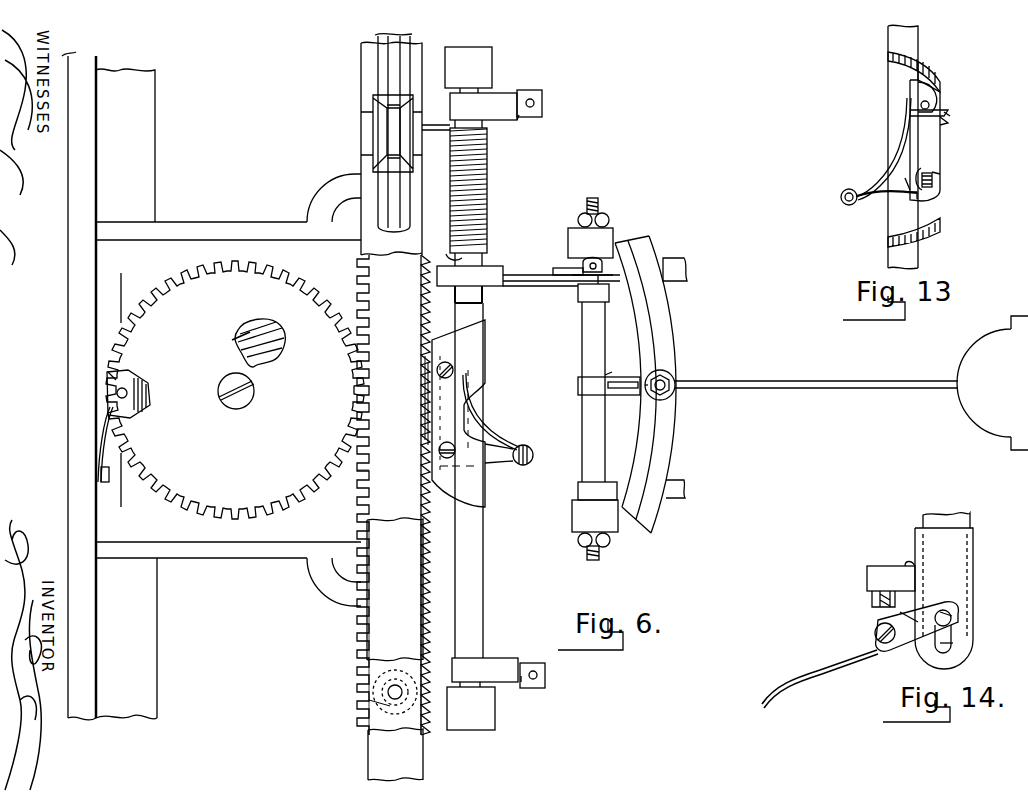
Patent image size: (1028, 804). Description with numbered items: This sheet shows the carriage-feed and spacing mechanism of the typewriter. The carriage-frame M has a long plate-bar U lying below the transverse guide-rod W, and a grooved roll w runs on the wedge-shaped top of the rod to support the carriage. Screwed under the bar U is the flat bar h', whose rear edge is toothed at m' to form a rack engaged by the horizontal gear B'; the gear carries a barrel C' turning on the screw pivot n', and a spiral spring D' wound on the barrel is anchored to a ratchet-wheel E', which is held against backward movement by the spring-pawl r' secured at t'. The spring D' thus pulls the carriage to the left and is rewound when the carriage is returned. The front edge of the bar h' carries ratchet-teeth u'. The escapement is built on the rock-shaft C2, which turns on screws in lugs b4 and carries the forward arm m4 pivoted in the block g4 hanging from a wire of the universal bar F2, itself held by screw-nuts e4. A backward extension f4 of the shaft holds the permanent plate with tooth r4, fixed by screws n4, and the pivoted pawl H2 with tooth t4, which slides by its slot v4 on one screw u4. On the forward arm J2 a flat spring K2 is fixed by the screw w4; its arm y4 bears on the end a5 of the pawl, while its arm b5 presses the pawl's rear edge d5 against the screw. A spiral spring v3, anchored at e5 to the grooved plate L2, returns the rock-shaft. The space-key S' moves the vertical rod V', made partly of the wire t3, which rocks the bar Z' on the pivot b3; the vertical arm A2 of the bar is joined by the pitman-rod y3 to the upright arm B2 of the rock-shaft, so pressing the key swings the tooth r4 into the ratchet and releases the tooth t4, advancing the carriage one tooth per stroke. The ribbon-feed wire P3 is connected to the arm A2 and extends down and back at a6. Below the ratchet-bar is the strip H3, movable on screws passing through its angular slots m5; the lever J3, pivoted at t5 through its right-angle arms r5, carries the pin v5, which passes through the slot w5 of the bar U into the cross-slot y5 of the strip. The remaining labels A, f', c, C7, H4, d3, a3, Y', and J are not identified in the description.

In FIG. 6, the frame column A is at (148, 155).
In FIG. 6, the frame plate f' is at (58, 385).
In FIG. 6, the horizontal gear B' is at (235, 396).
In FIG. 6, the screw pivot n' is at (252, 391).
In FIG. 6, the barrel C' is at (267, 350).
In FIG. 6, the spiral spring D' is at (209, 370).
In FIG. 6, the pin c is at (230, 342).
In FIG. 6, the ratchet-wheel E' is at (95, 382).
In FIG. 6, the spring-pawl r' is at (91, 444).
In FIG. 6, the pawl securing point t' is at (91, 475).
In FIG. 6, the toothed rear edge m' is at (393, 495).
In FIG. 6, the ratchet-teeth u' is at (414, 400).
In FIG. 6, the flat horizontal bar h' is at (347, 485).
In FIG. 6, the plate-bar U is at (410, 236).
In FIG. 14, the plate-bar U is at (958, 563).
In FIG. 6, the guide-rod W is at (392, 83).
In FIG. 6, the grooved roll w is at (386, 133).
In FIG. 6, the spring end e5 is at (444, 254).
In FIG. 6, the spiral spring v3 is at (487, 176).
In FIG. 6, the lugs b4 is at (492, 74).
In FIG. 6, the horizontal arm m4 is at (498, 120).
In FIG. 13, the horizontal arm m4 is at (893, 101).
In FIG. 6, the block g4 is at (532, 398).
In FIG. 6, the eye block C7 is at (542, 104).
In FIG. 6, the eye block H4 is at (545, 676).
In FIG. 6, the grooved plate L2 is at (500, 266).
In FIG. 6, the vertical arm A2 is at (578, 296).
In FIG. 6, the upright arm B2 is at (484, 296).
In FIG. 6, the rock-shaft C2 is at (473, 312).
In FIG. 13, the rock-shaft C2 is at (946, 104).
In FIG. 6, the horizontal arm J2 is at (500, 470).
In FIG. 6, the spring arm y4 is at (503, 470).
In FIG. 13, the spring arm y4 is at (898, 197).
In FIG. 6, the securing-screws n4 is at (452, 360).
In FIG. 13, the securing-screws n4 is at (915, 108).
In FIG. 6, the flat spring K2 is at (482, 416).
In FIG. 13, the flat spring K2 is at (866, 201).
In FIG. 6, the screw w4 is at (523, 445).
In FIG. 13, the screw w4 is at (840, 201).
In FIG. 6, the rocking bar Z' is at (581, 392).
In FIG. 6, the bracket d3 is at (568, 230).
In FIG. 6, the pivot b3 is at (600, 206).
In FIG. 6, the wire extension a6 is at (590, 255).
In FIG. 14, the wire extension a6 is at (780, 685).
In FIG. 6, the pitman-rod y3 is at (548, 262).
In FIG. 6, the wire pawl P3 is at (604, 256).
In FIG. 6, the tab a3 is at (672, 257).
In FIG. 6, the rod wire t3 is at (636, 397).
In FIG. 6, the slot Y' is at (616, 360).
In FIG. 6, the universal bar F2 is at (664, 430).
In FIG. 6, the vertical rod V' is at (683, 378).
In FIG. 6, the screw-nuts e4 is at (676, 392).
In FIG. 6, the space-key lever S' is at (851, 383).
In FIG. 6, the carriage-frame M is at (360, 622).
In FIG. 6, the longitudinal slot w5 is at (392, 694).
In FIG. 14, the longitudinal slot w5 is at (955, 644).
In FIG. 6, the angular slots m5 is at (368, 710).
In FIG. 6, the flat strip H3 is at (370, 752).
In FIG. 14, the flat strip H3 is at (949, 508).
In FIG. 13, the backward extension f4 is at (938, 74).
In FIG. 13, the spring-tooth pawl H2 is at (940, 143).
In FIG. 13, the rear edge d5 is at (930, 86).
In FIG. 13, the ratchet-tooth t4 is at (977, 103).
In FIG. 13, the ratchet-tooth r4 is at (949, 122).
In FIG. 13, the spring arm b5 is at (897, 143).
In FIG. 13, the pivot screw u4 is at (924, 169).
In FIG. 13, the longitudinal slot v4 is at (940, 172).
In FIG. 13, the pawl end a5 is at (900, 177).
In FIG. 14, the bracket J is at (868, 598).
In FIG. 14, the horizontal lever J3 is at (880, 652).
In FIG. 14, the pivot t5 is at (874, 628).
In FIG. 14, the lever arms r5 is at (925, 612).
In FIG. 14, the cross-slot y5 is at (950, 612).
In FIG. 14, the pin v5 is at (951, 618).